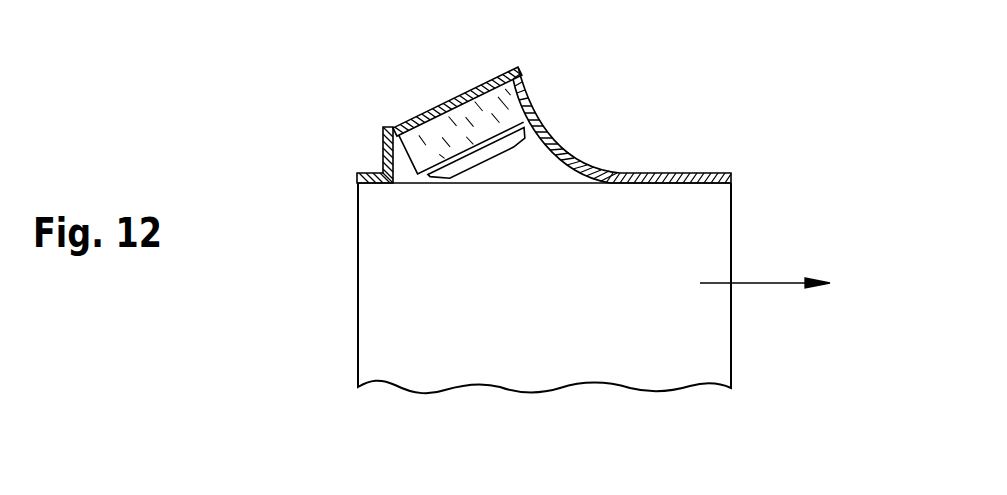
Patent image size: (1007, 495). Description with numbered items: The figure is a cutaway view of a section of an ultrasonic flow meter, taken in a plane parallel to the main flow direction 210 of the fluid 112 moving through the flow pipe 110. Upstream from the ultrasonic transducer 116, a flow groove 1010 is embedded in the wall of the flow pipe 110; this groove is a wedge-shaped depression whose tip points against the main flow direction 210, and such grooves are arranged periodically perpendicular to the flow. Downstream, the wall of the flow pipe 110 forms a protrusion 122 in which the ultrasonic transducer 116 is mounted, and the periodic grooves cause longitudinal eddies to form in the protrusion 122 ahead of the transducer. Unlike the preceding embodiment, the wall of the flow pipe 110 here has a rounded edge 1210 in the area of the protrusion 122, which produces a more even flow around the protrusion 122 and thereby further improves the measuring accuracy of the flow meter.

The flow pipe 110 is at (700, 173).
The fluid 112 is at (412, 342).
The ultrasonic transducer 116 is at (472, 125).
The protrusion 122 is at (548, 152).
The flow groove 1010 is at (405, 184).
The rounded edge 1210 is at (562, 196).
The main flow direction 210 is at (775, 281).